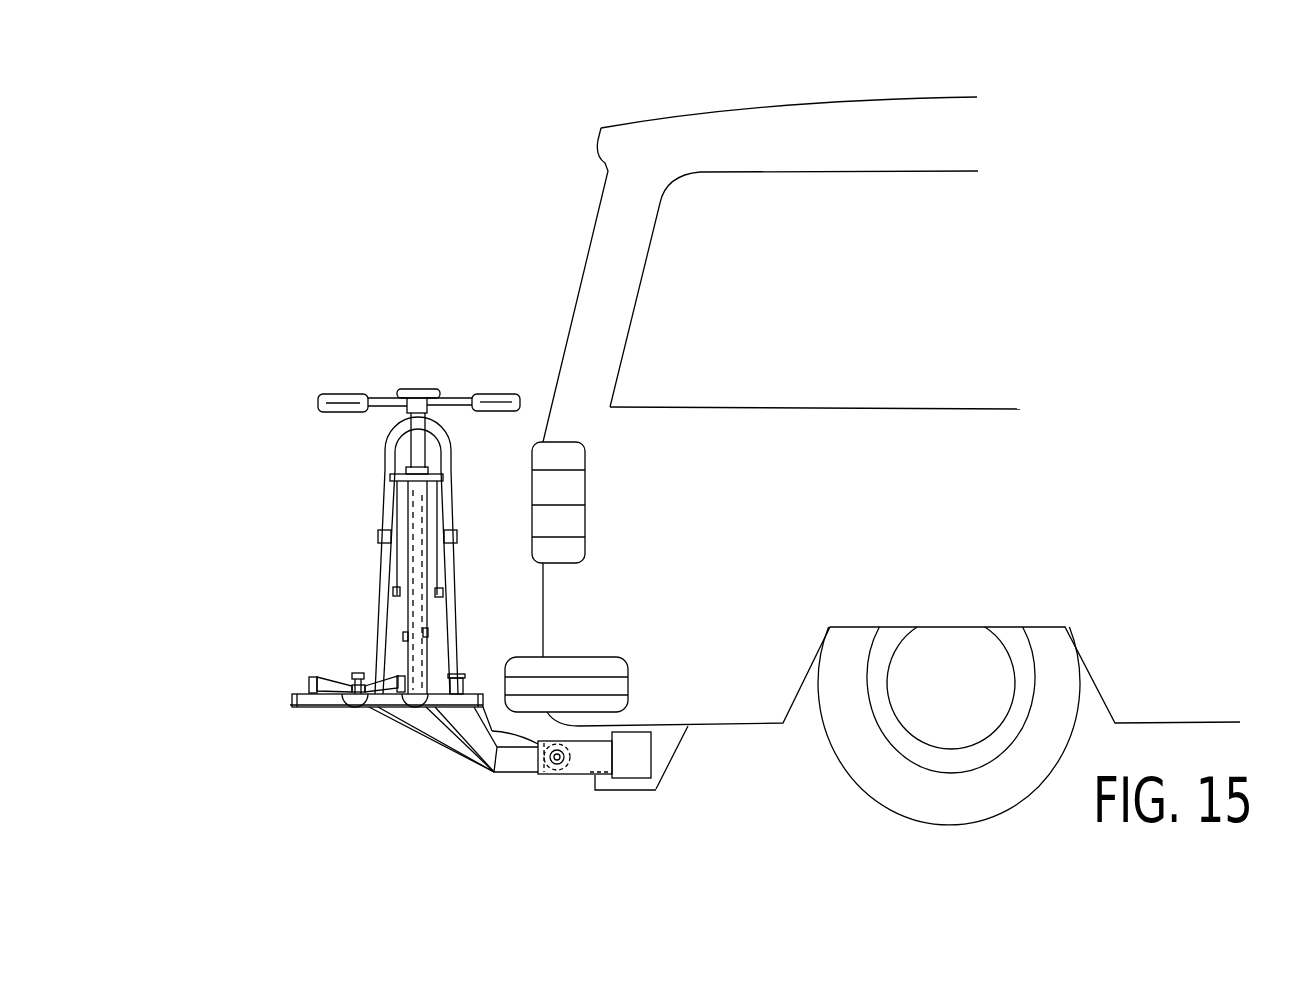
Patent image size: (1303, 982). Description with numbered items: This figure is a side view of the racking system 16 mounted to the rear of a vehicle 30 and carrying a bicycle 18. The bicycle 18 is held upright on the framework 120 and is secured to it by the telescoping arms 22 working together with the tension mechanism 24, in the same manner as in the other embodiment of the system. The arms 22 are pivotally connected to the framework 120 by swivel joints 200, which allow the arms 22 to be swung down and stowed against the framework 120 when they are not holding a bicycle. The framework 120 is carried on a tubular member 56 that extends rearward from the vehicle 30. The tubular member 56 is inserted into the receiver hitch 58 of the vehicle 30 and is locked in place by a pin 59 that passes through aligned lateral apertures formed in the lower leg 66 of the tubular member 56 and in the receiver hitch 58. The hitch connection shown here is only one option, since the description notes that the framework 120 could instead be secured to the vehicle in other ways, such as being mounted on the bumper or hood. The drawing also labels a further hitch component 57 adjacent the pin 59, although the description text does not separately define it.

The vehicle 30 is at (645, 116).
The racking system 16 is at (476, 566).
The bicycle 18 is at (412, 385).
The telescoping arms 22 is at (381, 576).
The tension mechanism 24 is at (405, 632).
The swivel joints 200 is at (464, 683).
The framework 120 is at (290, 705).
The tubular member 56 is at (489, 775).
The lower leg 66 is at (515, 766).
The hitch tube 57 is at (560, 770).
The pin 59 is at (556, 766).
The receiver hitch 58 is at (597, 786).